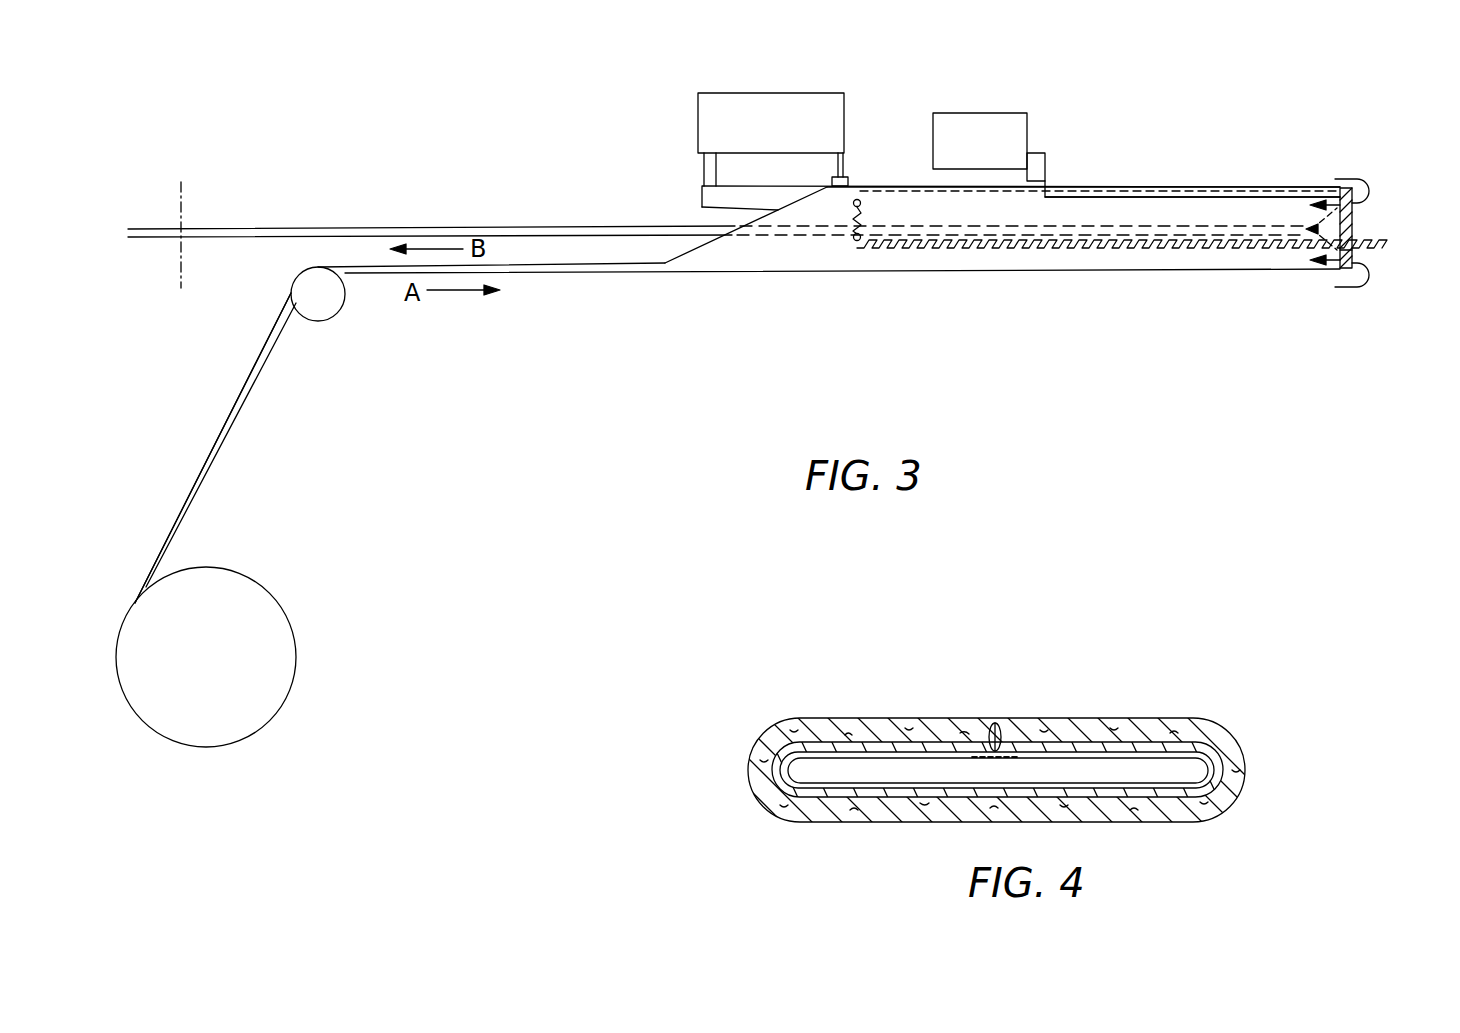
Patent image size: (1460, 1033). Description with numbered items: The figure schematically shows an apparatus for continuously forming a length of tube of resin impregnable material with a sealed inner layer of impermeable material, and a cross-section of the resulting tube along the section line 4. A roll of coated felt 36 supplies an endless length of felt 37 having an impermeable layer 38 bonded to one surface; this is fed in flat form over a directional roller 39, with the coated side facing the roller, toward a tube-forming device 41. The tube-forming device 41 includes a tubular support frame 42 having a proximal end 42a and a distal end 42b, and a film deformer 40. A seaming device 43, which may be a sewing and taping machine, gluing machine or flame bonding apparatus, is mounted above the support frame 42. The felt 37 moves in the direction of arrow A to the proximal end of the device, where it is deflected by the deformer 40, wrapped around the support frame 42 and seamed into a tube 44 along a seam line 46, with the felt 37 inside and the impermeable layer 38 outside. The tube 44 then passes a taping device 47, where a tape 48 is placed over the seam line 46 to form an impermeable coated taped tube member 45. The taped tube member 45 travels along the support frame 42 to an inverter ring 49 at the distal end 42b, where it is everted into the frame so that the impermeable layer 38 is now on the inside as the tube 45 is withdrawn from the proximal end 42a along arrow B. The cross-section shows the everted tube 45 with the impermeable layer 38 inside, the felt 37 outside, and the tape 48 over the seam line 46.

In FIG. 3, the section line of FIG. 4 is at (168, 196).
In FIG. 3, the roll of coated felt 36 is at (287, 636).
In FIG. 3, the felt 37 is at (196, 476).
In FIG. 4, the felt 37 is at (1228, 745).
In FIG. 3, the impermeable layer 38 is at (237, 422).
In FIG. 4, the impermeable layer 38 is at (1105, 757).
In FIG. 3, the directional roller 39 is at (333, 309).
In FIG. 3, the film deformer 40 is at (693, 252).
In FIG. 3, the tube-forming device 41 is at (1075, 126).
In FIG. 3, the tubular support frame 42 is at (910, 250).
In FIG. 3, the proximal end 42a is at (852, 240).
In FIG. 3, the distal end 42b is at (1340, 250).
In FIG. 3, the seaming device 43 is at (716, 92).
In FIG. 3, the tube 44 is at (560, 232).
In FIG. 3, the impermeable coated taped tube member 45 is at (240, 218).
In FIG. 4, the impermeable coated taped tube member 45 is at (912, 718).
In FIG. 3, the seam line 46 is at (873, 187).
In FIG. 4, the seam line 46 is at (975, 722).
In FIG. 3, the taping device 47 is at (993, 113).
In FIG. 3, the tape 48 is at (1243, 185).
In FIG. 4, the tape 48 is at (1010, 760).
In FIG. 3, the inverter ring 49 is at (1352, 232).